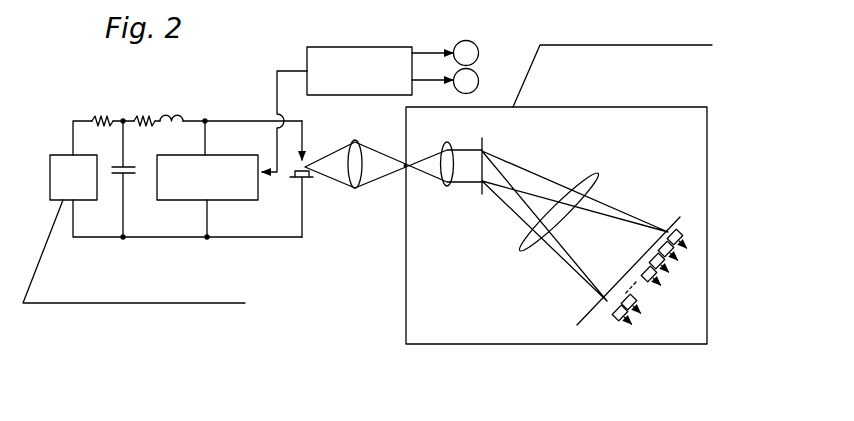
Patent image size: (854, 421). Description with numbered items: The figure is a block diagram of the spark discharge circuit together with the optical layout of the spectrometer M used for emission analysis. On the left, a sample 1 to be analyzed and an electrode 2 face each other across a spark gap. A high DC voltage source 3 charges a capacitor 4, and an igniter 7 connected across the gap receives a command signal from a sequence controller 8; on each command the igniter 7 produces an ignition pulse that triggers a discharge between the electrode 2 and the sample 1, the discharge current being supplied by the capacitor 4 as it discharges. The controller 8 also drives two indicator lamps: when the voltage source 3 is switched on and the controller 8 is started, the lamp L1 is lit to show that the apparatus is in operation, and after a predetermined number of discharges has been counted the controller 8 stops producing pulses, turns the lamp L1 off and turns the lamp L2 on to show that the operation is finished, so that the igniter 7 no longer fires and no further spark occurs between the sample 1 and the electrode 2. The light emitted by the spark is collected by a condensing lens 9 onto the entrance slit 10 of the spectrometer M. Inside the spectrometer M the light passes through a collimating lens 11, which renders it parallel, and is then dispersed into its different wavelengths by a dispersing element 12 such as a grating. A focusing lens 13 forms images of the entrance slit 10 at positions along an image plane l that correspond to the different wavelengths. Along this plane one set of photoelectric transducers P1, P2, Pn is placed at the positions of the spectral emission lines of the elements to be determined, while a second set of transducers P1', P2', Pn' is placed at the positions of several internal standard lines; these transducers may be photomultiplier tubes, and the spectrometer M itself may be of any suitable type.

The sample 1 is at (307, 182).
The electrode 2 is at (306, 164).
The high DC voltage source 3 is at (62, 155).
The capacitor 4 is at (127, 167).
The igniter 7 is at (222, 151).
The sequence controller 8 is at (355, 47).
The condensing lens 9 is at (355, 188).
The entrance slit 10 is at (405, 170).
The collimating lens 11 is at (447, 187).
The dispersing element 12 is at (482, 195).
The focusing lens 13 is at (520, 252).
The lamp L1 is at (474, 43).
The lamp L2 is at (477, 73).
The spectrometer M is at (648, 107).
The image plane l is at (672, 215).
The photoelectric transducer P1 is at (712, 238).
The photoelectric transducer P1' is at (707, 259).
The photoelectric transducer P2 is at (704, 283).
The photoelectric transducer P2' is at (706, 305).
The photoelectric transducer Pn is at (662, 337).
The photoelectric transducer Pn' is at (631, 348).